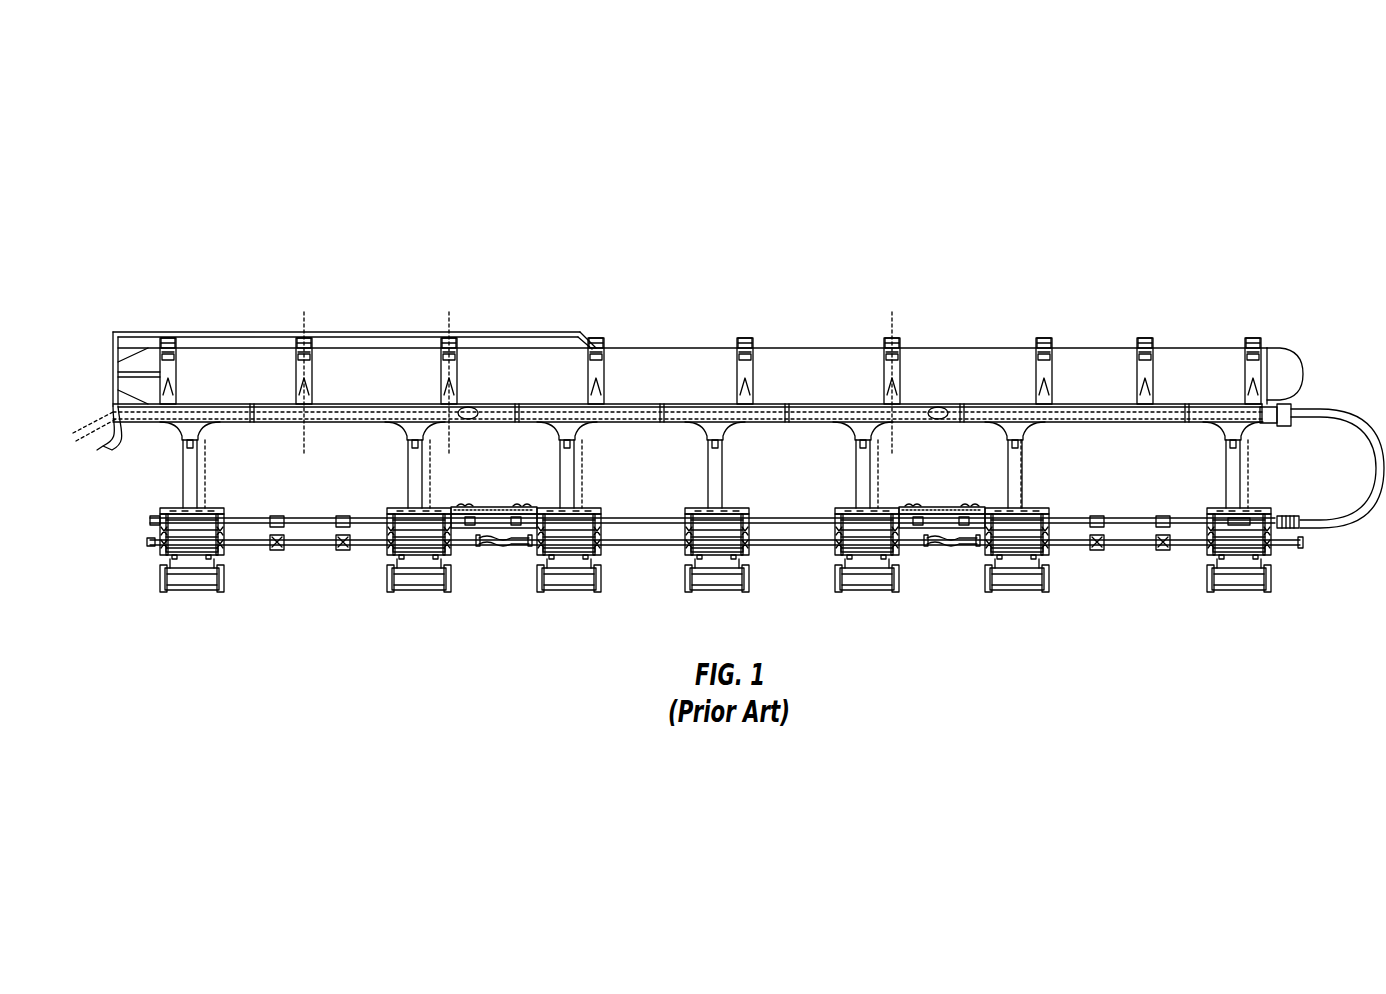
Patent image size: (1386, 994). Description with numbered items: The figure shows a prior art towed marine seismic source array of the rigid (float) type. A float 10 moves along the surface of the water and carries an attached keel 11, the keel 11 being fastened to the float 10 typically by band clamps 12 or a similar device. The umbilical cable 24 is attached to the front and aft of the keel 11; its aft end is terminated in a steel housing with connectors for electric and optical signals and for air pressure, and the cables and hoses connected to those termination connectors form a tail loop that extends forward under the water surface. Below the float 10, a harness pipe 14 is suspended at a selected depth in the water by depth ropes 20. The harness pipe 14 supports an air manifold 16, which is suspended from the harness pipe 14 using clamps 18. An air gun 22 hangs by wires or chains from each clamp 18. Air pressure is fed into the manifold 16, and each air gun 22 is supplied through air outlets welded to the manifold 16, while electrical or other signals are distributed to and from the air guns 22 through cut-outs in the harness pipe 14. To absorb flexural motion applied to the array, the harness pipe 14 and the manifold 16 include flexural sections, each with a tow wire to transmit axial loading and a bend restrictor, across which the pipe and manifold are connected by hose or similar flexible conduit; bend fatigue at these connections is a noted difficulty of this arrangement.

The float 10 is at (668, 360).
The keel 11 is at (772, 423).
The band clamps 12 is at (168, 338).
The harness pipe 14 is at (1130, 518).
The air manifold 16 is at (147, 542).
The clamps 18 is at (172, 508).
The depth ropes 20 is at (183, 480).
The air gun 22 is at (195, 577).
The umbilical cable 24 is at (95, 415).